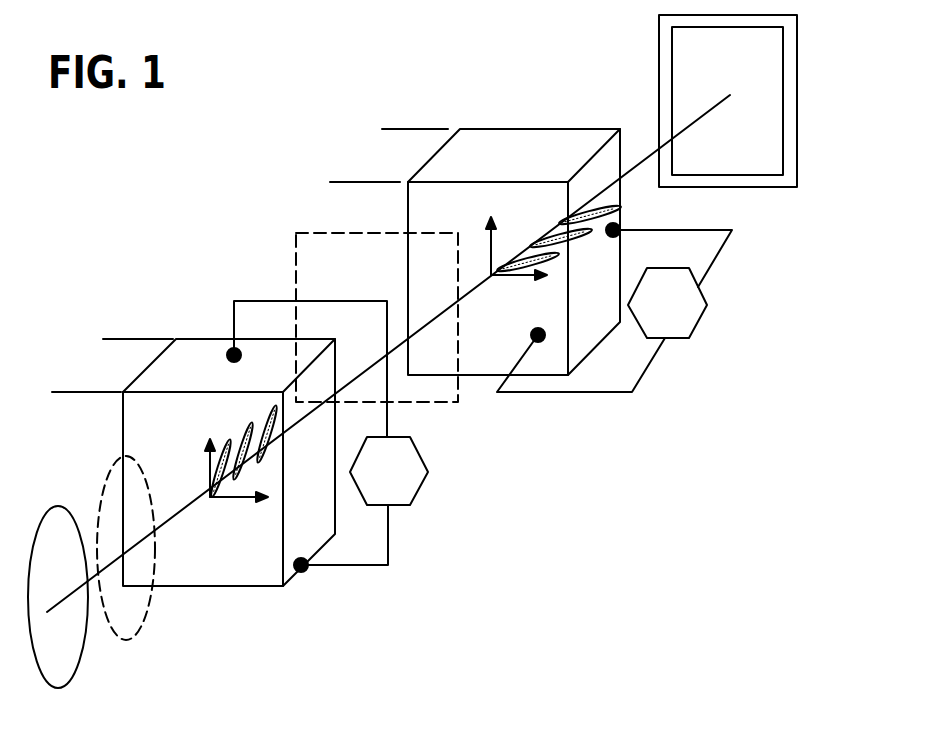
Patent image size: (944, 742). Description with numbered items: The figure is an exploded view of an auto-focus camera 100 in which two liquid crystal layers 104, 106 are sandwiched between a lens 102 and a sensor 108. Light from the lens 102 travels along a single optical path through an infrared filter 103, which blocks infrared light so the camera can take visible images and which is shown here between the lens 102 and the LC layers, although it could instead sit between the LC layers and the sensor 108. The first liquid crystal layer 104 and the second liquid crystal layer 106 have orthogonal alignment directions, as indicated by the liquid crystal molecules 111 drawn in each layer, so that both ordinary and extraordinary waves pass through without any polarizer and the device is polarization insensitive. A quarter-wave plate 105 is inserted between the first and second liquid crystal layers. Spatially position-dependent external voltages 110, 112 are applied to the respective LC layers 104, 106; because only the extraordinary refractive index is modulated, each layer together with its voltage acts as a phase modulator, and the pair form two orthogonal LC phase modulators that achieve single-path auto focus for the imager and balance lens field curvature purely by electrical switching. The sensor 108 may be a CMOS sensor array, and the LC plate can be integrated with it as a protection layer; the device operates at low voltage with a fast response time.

The auto-focus camera 100 is at (148, 148).
The lens 102 is at (85, 648).
The infrared filter 103 is at (148, 610).
The liquid crystal layer 104 is at (188, 338).
The quarter-wave plate 105 is at (420, 403).
The liquid crystal layer 106 is at (512, 133).
The sensor 108 is at (752, 175).
The external voltage 110 is at (413, 492).
The liquid crystal molecules 111 is at (248, 428).
The external voltage 112 is at (688, 322).